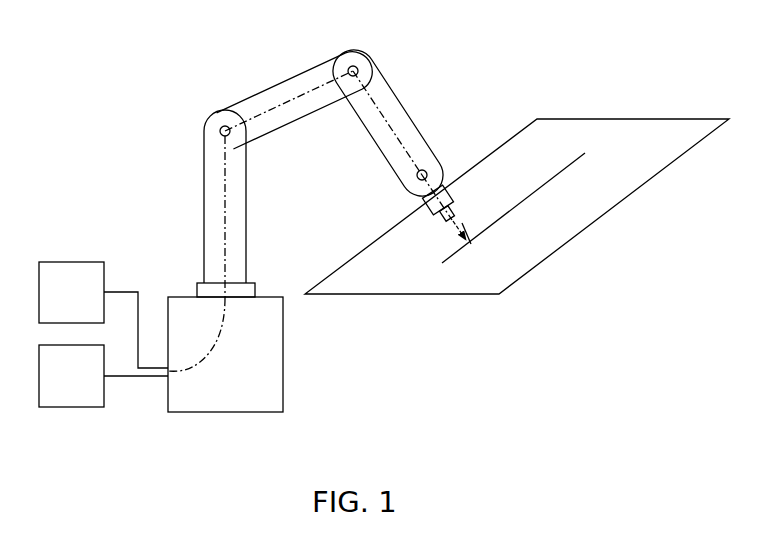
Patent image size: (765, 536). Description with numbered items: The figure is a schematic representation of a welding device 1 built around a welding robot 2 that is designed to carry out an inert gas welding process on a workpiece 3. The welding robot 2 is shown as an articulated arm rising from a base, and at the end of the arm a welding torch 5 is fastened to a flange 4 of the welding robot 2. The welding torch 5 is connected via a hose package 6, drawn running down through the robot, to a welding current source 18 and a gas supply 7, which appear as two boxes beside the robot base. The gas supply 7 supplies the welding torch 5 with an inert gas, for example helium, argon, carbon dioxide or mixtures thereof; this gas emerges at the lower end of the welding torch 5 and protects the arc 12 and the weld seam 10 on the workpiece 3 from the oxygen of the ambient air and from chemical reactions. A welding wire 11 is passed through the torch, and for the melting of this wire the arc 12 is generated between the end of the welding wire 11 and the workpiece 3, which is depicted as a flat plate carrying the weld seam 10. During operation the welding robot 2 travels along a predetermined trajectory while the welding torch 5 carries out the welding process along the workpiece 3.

The welding device 1 is at (240, 67).
The welding robot 2 is at (195, 212).
The workpiece 3 is at (458, 190).
The flange 4 is at (448, 168).
The welding torch 5 is at (428, 206).
The hose package 6 is at (313, 87).
The gas supply 7 is at (78, 302).
The weld seam 10 is at (522, 204).
The welding wire 11 is at (445, 229).
The arc 12 is at (455, 238).
The welding current source 18 is at (84, 386).